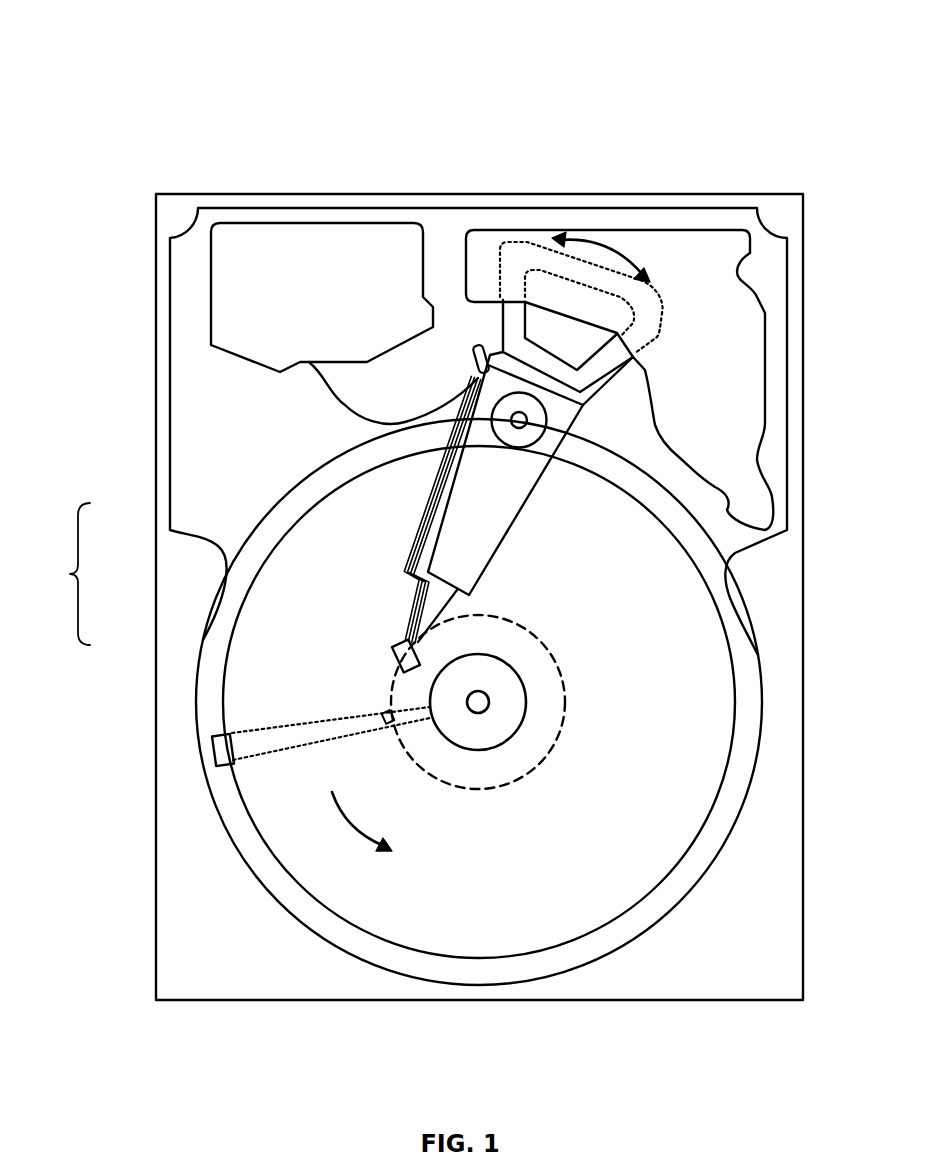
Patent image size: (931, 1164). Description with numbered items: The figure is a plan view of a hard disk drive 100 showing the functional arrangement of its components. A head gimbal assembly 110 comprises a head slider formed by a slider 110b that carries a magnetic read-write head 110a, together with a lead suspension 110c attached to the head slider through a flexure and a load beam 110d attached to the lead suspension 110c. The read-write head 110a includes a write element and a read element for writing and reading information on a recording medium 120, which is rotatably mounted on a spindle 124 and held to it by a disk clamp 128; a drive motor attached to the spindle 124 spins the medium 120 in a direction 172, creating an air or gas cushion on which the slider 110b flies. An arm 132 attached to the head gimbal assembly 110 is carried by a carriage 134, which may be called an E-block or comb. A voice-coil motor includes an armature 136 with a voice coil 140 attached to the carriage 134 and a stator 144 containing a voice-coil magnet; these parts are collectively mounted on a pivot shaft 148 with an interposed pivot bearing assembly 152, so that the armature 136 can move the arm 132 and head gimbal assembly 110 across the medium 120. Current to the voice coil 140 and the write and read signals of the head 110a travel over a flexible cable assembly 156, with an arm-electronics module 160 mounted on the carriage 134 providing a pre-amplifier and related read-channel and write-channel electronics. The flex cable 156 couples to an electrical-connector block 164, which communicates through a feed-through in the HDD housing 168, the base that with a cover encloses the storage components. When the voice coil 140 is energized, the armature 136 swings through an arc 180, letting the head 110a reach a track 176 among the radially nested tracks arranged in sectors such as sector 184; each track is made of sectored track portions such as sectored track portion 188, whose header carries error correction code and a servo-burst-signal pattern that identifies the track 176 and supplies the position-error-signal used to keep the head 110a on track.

The hard disk drive 100 is at (88, 78).
The head gimbal assembly 110 is at (53, 574).
The magnetic read-write head 110a is at (396, 666).
The slider 110b is at (405, 638).
The lead suspension 110c is at (414, 596).
The load beam 110d is at (406, 573).
The recording medium 120 is at (665, 655).
The spindle 124 is at (480, 702).
The disk clamp 128 is at (505, 720).
The arm 132 is at (470, 535).
The carriage 134 is at (538, 457).
The armature 136 is at (498, 316).
The voice coil 140 is at (515, 312).
The stator 144 is at (732, 323).
The pivot shaft 148 is at (520, 420).
The pivot bearing assembly 152 is at (535, 432).
The flexible cable assembly 156 is at (337, 397).
The arm-electronics module 160 is at (470, 385).
The electrical-connector block 164 is at (236, 297).
The HDD housing 168 is at (785, 205).
The direction 172 is at (367, 830).
The track 176 is at (556, 665).
The arc 180 is at (603, 247).
The sector 184 is at (214, 748).
The sectored track portion 188 is at (385, 713).